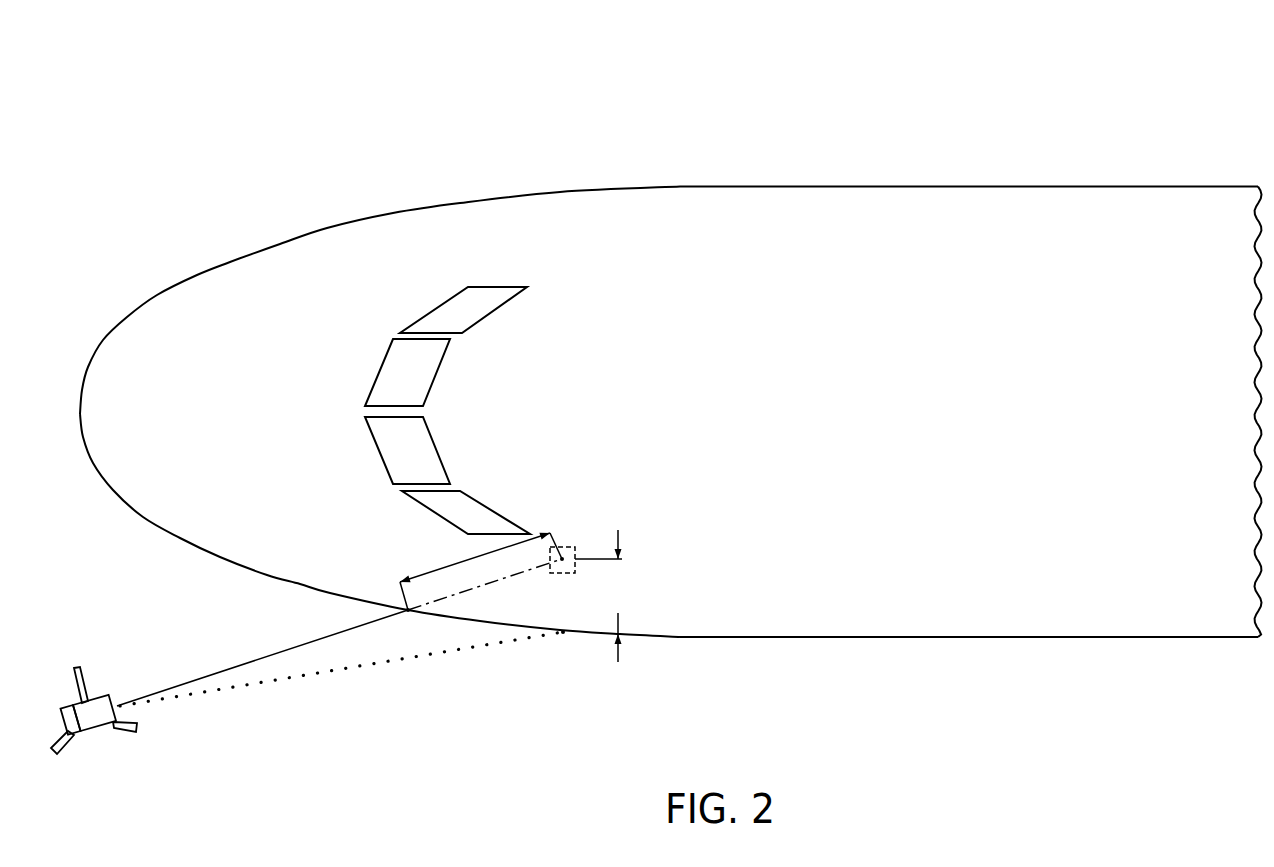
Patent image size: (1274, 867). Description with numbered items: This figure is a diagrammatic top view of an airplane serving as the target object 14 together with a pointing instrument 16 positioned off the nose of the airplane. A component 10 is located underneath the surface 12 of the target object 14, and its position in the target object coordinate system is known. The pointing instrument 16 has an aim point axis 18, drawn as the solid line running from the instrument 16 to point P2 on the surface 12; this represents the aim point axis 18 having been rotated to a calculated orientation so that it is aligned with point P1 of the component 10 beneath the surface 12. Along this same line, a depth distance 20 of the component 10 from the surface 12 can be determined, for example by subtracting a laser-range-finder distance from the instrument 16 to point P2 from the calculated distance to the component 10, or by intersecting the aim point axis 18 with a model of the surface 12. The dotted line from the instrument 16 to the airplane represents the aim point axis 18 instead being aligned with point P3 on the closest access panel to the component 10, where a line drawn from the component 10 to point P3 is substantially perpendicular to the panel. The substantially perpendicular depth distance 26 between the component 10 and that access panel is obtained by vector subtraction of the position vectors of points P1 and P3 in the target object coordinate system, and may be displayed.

The component 10 is at (576, 553).
The surface 12 is at (1002, 638).
The target object 14 is at (671, 323).
The pointing instrument 16 is at (106, 758).
The aim point axis 18 is at (232, 668).
The depth distance 20 is at (481, 571).
The depth distance 26 is at (604, 596).
The point P1 is at (562, 557).
The point P2 is at (406, 610).
The point P3 is at (563, 633).